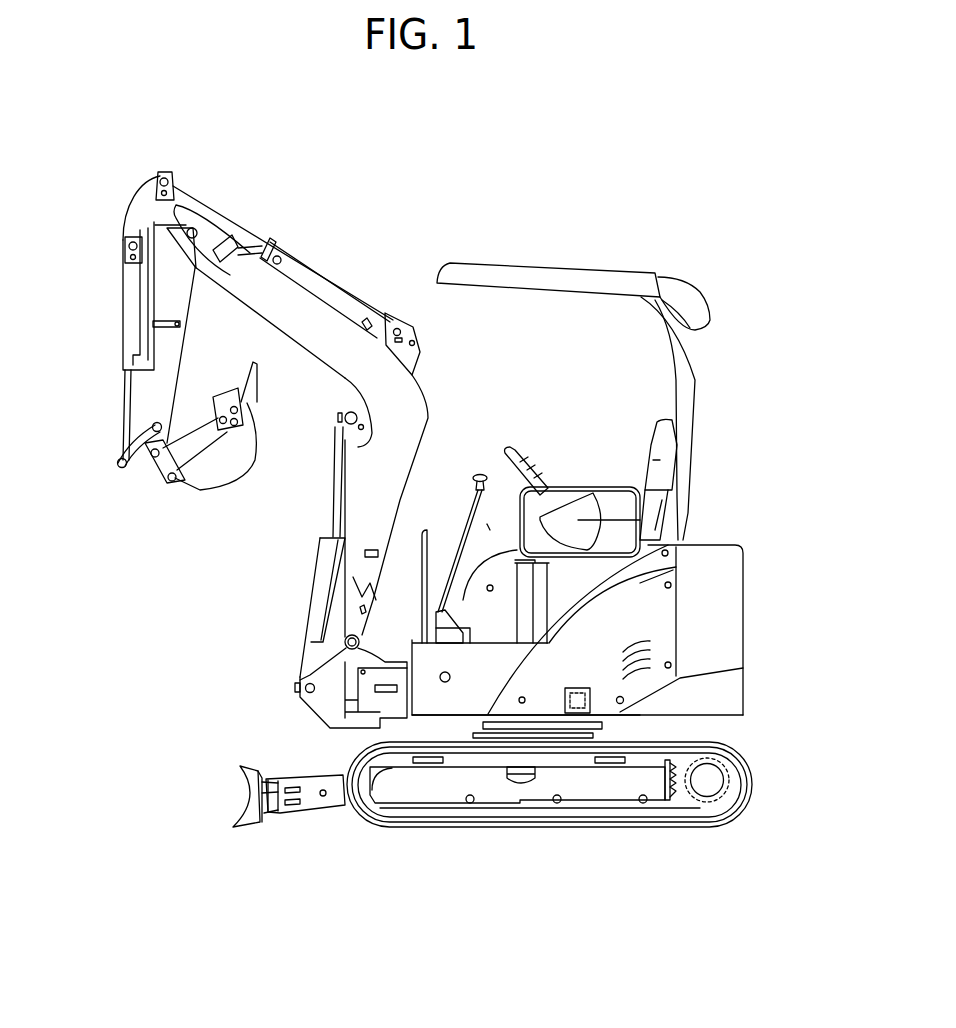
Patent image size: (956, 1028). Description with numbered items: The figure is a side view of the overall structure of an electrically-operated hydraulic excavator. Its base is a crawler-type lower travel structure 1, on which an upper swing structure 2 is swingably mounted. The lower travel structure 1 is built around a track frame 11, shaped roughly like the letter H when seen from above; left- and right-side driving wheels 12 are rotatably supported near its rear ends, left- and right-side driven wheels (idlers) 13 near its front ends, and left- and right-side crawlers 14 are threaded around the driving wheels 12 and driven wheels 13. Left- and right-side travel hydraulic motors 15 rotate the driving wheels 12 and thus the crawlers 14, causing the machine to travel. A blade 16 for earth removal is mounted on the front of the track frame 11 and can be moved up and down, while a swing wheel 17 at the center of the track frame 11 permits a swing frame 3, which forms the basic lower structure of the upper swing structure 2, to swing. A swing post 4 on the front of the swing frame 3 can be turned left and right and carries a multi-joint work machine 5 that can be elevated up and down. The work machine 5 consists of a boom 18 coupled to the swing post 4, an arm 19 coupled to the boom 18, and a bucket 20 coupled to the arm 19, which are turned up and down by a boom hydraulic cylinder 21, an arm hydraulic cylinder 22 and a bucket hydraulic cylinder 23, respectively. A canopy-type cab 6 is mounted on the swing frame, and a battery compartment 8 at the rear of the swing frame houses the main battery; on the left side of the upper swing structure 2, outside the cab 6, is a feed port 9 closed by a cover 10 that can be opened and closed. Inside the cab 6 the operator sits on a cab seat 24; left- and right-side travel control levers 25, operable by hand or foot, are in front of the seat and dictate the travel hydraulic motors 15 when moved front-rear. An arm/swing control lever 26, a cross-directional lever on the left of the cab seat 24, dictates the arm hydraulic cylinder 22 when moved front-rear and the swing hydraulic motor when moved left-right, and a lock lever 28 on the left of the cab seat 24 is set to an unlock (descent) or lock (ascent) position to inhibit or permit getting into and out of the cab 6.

The lower travel structure 1 is at (758, 763).
The upper swing structure 2 is at (755, 563).
The swing frame 3 is at (640, 715).
The swing post 4 is at (328, 707).
The multi-joint work machine 5 is at (290, 233).
The canopy-type cab 6 is at (591, 260).
The battery compartment 8 is at (745, 620).
The feed port 9 is at (577, 717).
The cover 10 is at (578, 690).
The track frame 11 is at (443, 788).
The driving wheels 12 is at (690, 805).
The driven wheels (idlers) 13 is at (365, 788).
The crawlers 14 is at (398, 821).
The travel hydraulic motors 15 is at (703, 778).
The blade 16 is at (237, 798).
The swing wheel 17 is at (527, 745).
The boom 18 is at (370, 505).
The arm 19 is at (160, 400).
The bucket 20 is at (218, 470).
The boom hydraulic cylinder 21 is at (320, 603).
The arm hydraulic cylinder 22 is at (343, 292).
The bucket hydraulic cylinder 23 is at (122, 318).
The cab seat 24 is at (640, 470).
The travel control levers 25 is at (480, 474).
The arm/swing control lever 26 is at (512, 455).
The lock lever 28 is at (487, 524).